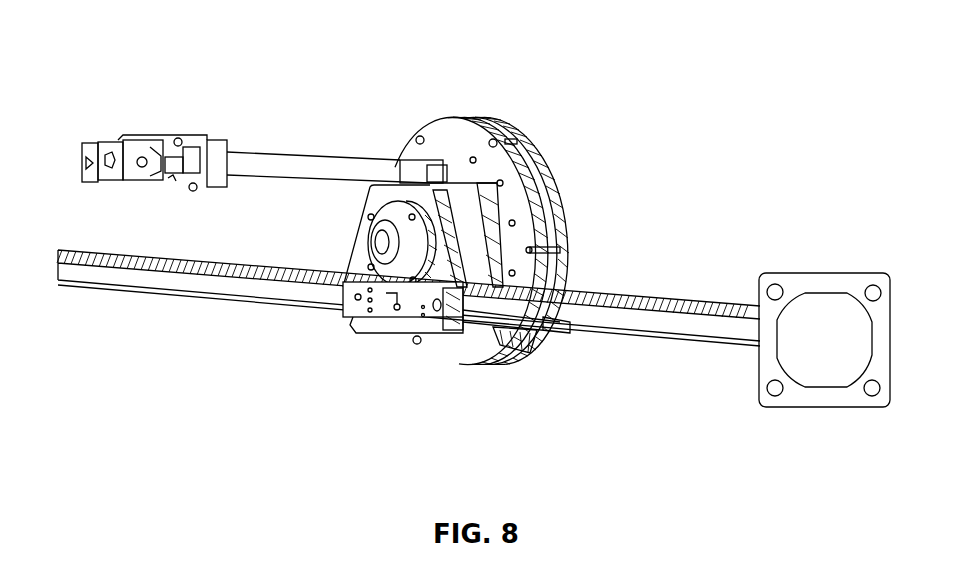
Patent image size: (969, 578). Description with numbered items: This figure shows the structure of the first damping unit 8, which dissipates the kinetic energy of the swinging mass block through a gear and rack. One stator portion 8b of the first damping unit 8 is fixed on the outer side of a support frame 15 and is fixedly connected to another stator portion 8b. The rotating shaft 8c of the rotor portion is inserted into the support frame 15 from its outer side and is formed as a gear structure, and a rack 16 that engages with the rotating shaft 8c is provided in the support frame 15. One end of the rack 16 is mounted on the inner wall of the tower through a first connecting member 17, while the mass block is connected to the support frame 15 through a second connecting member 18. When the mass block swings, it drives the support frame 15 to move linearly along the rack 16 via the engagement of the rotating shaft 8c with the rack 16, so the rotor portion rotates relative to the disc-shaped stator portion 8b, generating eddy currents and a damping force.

The first damping unit 8 is at (538, 193).
The stator portion 8b is at (553, 182).
The rotating shaft 8c is at (460, 242).
The support frame 15 is at (517, 294).
The rack 16 is at (207, 290).
The first connecting member 17 is at (814, 288).
The second connecting member 18 is at (220, 118).